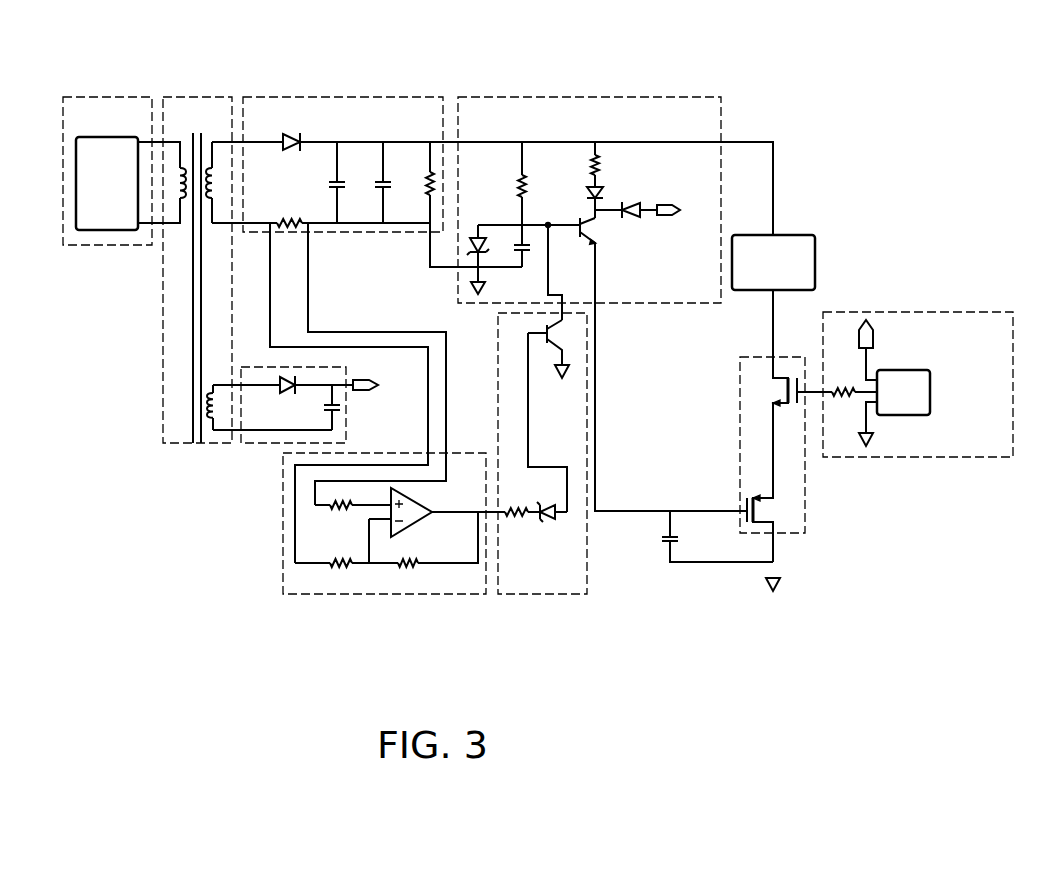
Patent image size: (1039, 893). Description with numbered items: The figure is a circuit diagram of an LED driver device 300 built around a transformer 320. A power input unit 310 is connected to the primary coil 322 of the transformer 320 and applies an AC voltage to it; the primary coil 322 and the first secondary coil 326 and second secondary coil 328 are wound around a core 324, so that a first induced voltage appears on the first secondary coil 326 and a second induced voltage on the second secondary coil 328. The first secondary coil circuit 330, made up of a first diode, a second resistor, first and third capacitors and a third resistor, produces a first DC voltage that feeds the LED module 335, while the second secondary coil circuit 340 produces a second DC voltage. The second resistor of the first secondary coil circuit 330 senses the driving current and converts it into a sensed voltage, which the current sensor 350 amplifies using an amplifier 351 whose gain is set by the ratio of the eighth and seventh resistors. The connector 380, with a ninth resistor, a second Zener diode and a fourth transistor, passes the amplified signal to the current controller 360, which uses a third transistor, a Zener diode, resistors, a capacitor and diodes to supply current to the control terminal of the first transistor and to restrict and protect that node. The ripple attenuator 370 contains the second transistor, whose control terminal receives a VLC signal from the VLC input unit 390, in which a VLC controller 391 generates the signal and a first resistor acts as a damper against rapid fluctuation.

The LED driver device 300 is at (493, 47).
The power input unit 310 is at (125, 96).
The transformer 320 is at (207, 96).
The primary coil 322 is at (180, 140).
The core 324 is at (192, 268).
The first secondary coil 326 is at (220, 140).
The second secondary coil 328 is at (213, 384).
The first secondary coil circuit 330 is at (404, 96).
The LED module 335 is at (790, 235).
The second secondary coil circuit 340 is at (262, 444).
The current sensor 350 is at (470, 454).
The amplifier 351 is at (418, 500).
The current controller 360 is at (690, 96).
The ripple attenuator 370 is at (797, 357).
The connector 380 is at (587, 545).
The VLC input unit 390 is at (994, 312).
The VLC controller 391 is at (920, 370).